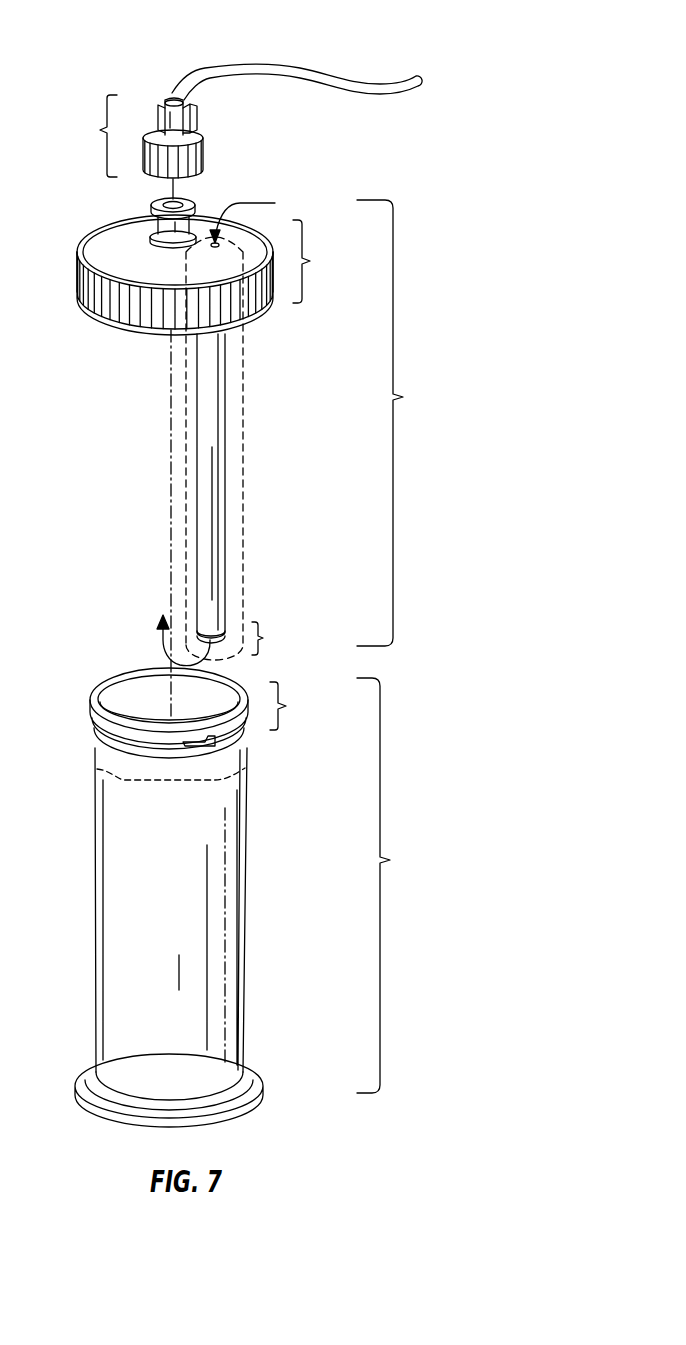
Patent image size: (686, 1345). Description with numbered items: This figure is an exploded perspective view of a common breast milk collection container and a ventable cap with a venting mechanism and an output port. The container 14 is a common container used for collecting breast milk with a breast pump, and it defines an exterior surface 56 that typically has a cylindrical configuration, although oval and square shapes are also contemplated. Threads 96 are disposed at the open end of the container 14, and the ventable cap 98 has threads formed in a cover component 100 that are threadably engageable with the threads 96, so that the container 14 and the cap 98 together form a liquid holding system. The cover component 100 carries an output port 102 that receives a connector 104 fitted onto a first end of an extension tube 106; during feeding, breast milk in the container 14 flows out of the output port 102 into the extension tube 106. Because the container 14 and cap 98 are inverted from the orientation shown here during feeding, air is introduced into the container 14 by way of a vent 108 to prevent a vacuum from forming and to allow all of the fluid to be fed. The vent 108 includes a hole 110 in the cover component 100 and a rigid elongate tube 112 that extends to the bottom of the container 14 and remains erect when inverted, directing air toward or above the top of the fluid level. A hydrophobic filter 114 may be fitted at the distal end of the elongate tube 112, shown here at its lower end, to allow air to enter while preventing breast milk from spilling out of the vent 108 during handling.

The container 14 is at (253, 889).
The exterior surface 56 is at (180, 901).
The threads 96 is at (288, 706).
The ventable cap 98 is at (395, 423).
The cover component 100 is at (212, 275).
The output port 102 is at (181, 228).
The connector 104 is at (100, 130).
The extension tube 106 is at (293, 72).
The vent 108 is at (186, 430).
The hole 110 is at (198, 236).
The rigid elongate tube 112 is at (205, 455).
The hydrophobic filter 114 is at (263, 638).